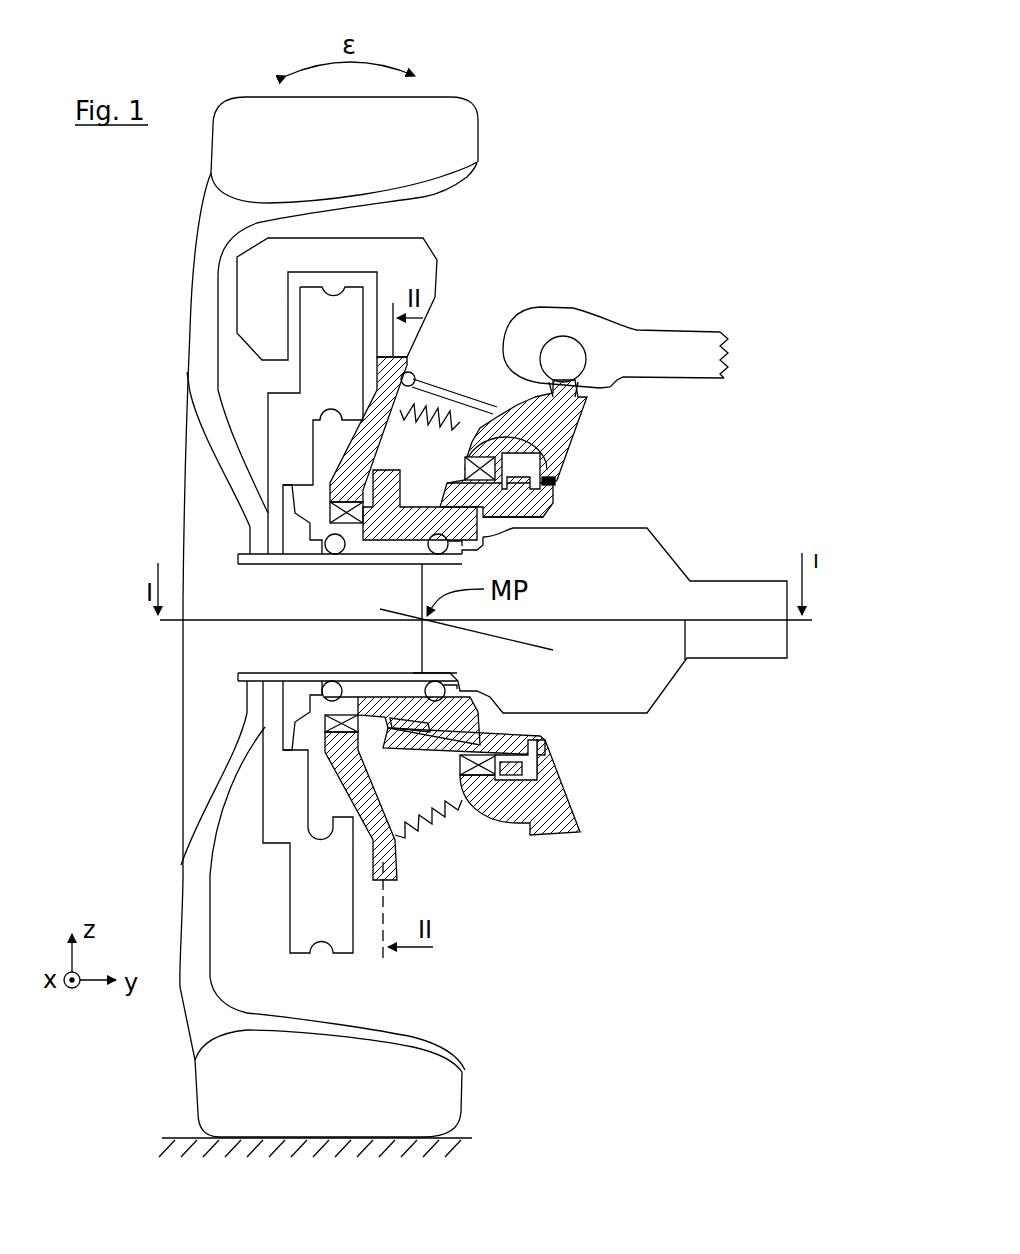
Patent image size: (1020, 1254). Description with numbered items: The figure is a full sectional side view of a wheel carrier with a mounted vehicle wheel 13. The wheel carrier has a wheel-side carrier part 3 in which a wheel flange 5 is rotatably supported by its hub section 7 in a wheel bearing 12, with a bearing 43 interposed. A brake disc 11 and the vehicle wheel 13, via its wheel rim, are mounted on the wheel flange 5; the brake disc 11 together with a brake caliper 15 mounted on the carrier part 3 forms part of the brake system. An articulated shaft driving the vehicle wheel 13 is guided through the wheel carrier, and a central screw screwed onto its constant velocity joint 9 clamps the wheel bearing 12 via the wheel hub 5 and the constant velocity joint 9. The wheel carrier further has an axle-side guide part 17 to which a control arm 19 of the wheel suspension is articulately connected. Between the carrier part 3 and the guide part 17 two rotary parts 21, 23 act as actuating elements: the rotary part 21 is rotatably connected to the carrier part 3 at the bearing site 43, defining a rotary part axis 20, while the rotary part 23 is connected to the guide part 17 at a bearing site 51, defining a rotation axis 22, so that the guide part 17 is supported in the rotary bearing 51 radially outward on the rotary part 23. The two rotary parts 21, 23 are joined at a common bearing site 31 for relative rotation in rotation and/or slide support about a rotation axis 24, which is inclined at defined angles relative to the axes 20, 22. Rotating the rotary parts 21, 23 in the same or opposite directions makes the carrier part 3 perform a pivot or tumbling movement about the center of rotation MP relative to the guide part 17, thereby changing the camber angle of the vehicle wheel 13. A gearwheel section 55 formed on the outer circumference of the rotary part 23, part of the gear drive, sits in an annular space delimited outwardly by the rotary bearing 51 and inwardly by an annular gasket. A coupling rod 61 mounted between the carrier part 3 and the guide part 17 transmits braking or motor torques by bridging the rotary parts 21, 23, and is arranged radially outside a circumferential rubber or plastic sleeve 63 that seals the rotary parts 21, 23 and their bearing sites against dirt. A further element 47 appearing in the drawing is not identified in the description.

The carrier part 3 is at (397, 857).
The wheel flange 5 is at (295, 540).
The hub section 7 is at (348, 564).
The constant velocity joint 9 is at (663, 528).
The brake disc 11 is at (352, 351).
The wheel bearing 12 is at (333, 691).
The vehicle wheel 13 is at (190, 281).
The brake caliper 15 is at (434, 252).
The guide part 17 is at (587, 398).
The control arm 19 is at (703, 326).
The rotary part axis 20 is at (205, 623).
The rotary part 21 is at (389, 506).
The rotation axis 22 is at (685, 660).
The rotary part 23 is at (457, 481).
The rotation axis 24 is at (553, 650).
The common bearing site 31 is at (545, 512).
The bearing site 43 is at (318, 513).
The bearing 47 is at (338, 768).
The bearing site 51 is at (562, 430).
The gearwheel section 55 is at (518, 768).
The coupling rod 61 is at (462, 422).
The sleeve 63 is at (466, 405).